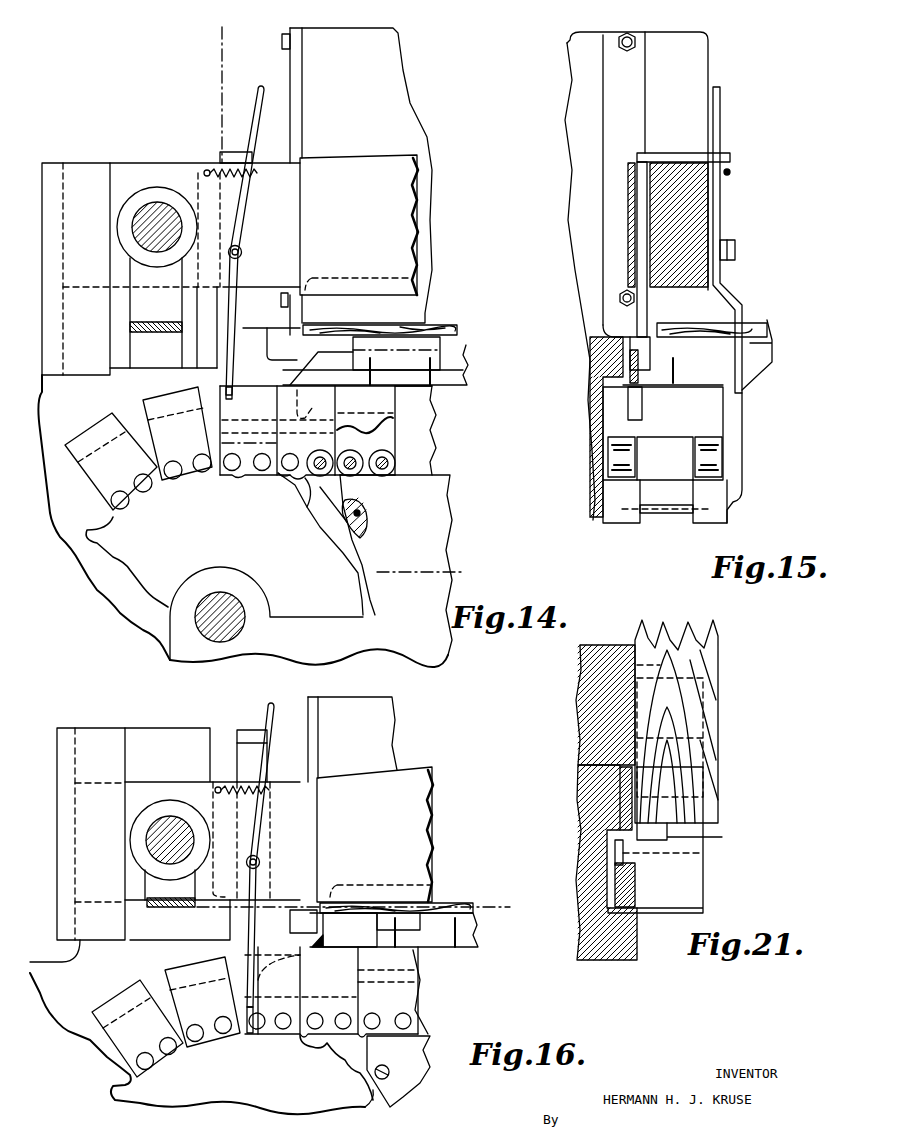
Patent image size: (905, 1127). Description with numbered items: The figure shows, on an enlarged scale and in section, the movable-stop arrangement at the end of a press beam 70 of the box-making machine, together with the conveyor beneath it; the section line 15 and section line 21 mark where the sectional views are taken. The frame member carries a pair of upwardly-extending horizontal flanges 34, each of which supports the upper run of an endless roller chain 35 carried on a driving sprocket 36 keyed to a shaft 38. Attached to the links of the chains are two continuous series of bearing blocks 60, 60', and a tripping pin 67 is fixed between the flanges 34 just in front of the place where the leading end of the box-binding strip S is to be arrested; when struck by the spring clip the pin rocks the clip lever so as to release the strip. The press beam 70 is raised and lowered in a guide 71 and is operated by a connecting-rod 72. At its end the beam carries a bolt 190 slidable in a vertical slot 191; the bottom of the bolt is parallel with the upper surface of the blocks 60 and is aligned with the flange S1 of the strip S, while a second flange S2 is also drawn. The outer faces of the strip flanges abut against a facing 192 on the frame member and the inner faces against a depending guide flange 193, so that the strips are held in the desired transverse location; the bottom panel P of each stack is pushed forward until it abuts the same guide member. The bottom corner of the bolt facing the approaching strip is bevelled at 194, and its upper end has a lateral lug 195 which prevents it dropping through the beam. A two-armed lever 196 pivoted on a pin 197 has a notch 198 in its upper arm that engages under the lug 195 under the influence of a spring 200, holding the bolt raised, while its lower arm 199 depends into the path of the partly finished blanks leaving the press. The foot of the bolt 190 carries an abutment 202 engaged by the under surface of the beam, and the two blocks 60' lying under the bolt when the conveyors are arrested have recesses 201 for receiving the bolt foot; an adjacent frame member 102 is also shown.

In FIG. 14, the section line 15— 15 is at (252, 24).
In FIG. 16, the section line 21— 21 is at (197, 907).
In FIG. 14, the flange 34 is at (396, 565).
In FIG. 15, the flange 34 is at (660, 514).
In FIG. 16, the flange 34 is at (427, 1037).
In FIG. 14, the endless roller chain 35 is at (399, 462).
In FIG. 15, the endless roller chain 35 is at (694, 463).
In FIG. 14, the driving sprocket 36 is at (243, 521).
In FIG. 16, the driving sprocket 36 is at (188, 1098).
In FIG. 14, the shaft 38 is at (245, 620).
In FIG. 14, the bearing block 60 is at (230, 448).
In FIG. 16, the bearing block 60 is at (251, 1017).
In FIG. 14, the bearing block 60' is at (326, 432).
In FIG. 15, the bearing block 60' is at (663, 433).
In FIG. 21, the bearing block 60' is at (679, 840).
In FIG. 14, the tripping pin 67 is at (350, 522).
In FIG. 15, the tripping pin 67 is at (666, 515).
In FIG. 16, the tripping pin 67 is at (390, 1072).
In FIG. 14, the press beam 70 is at (359, 225).
In FIG. 15, the press beam 70 is at (700, 70).
In FIG. 21, the press beam 70 is at (578, 752).
In FIG. 16, the press beam 70 is at (418, 800).
In FIG. 14, the guide 71 is at (87, 170).
In FIG. 16, the guide 71 is at (106, 736).
In FIG. 14, the connecting-rod 72 is at (157, 277).
In FIG. 16, the connecting-rod 72 is at (170, 853).
In FIG. 14, the frame member 102 is at (357, 181).
In FIG. 16, the frame member 102 is at (373, 738).
In FIG. 14, the bolt 190 is at (267, 346).
In FIG. 15, the bolt 190 is at (648, 307).
In FIG. 21, the bolt 190 is at (637, 887).
In FIG. 16, the bolt 190 is at (289, 922).
In FIG. 15, the vertical slot 191 is at (644, 165).
In FIG. 14, the facing 192 is at (315, 347).
In FIG. 14, the depending guide flange 193 is at (417, 358).
In FIG. 14, the bevel 194 is at (292, 370).
In FIG. 16, the bevel 194 is at (336, 992).
In FIG. 14, the lateral lug 195 is at (236, 152).
In FIG. 15, the lateral lug 195 is at (735, 153).
In FIG. 16, the lateral lug 195 is at (250, 730).
In FIG. 14, the two-armed lever 196 is at (247, 234).
In FIG. 15, the two-armed lever 196 is at (722, 230).
In FIG. 16, the two-armed lever 196 is at (266, 816).
In FIG. 14, the pin 197 is at (243, 253).
In FIG. 15, the pin 197 is at (737, 250).
In FIG. 16, the pin 197 is at (261, 862).
In FIG. 14, the notch 198 is at (258, 126).
In FIG. 16, the notch 198 is at (268, 746).
In FIG. 14, the lower arm 199 is at (226, 390).
In FIG. 16, the lower arm 199 is at (249, 1035).
In FIG. 14, the spring 200 is at (206, 170).
In FIG. 15, the spring 200 is at (729, 175).
In FIG. 16, the spring 200 is at (216, 788).
In FIG. 14, the recess 201 is at (316, 403).
In FIG. 15, the recess 201 is at (644, 406).
In FIG. 21, the recess 201 is at (630, 866).
In FIG. 16, the recess 201 is at (245, 962).
In FIG. 14, the abutment 202 is at (272, 321).
In FIG. 15, the abutment 202 is at (630, 325).
In FIG. 16, the abutment 202 is at (308, 917).
In FIG. 14, the panel P is at (376, 338).
In FIG. 15, the panel P is at (700, 323).
In FIG. 21, the panel P is at (720, 677).
In FIG. 16, the panel P is at (364, 910).
In FIG. 14, the strip S is at (331, 378).
In FIG. 15, the strip S is at (683, 384).
In FIG. 21, the strip S is at (686, 807).
In FIG. 16, the strip S is at (464, 948).
In FIG. 14, the flange S1 is at (468, 371).
In FIG. 15, the flange S1 is at (623, 380).
In FIG. 21, the flange S1 is at (610, 817).
In FIG. 16, the flange S1 is at (344, 930).
In FIG. 14, the shoe pin S2 is at (372, 380).
In FIG. 15, the shoe pin S2 is at (675, 366).
In FIG. 21, the shoe pin S2 is at (582, 780).
In FIG. 16, the shoe pin S2 is at (397, 942).